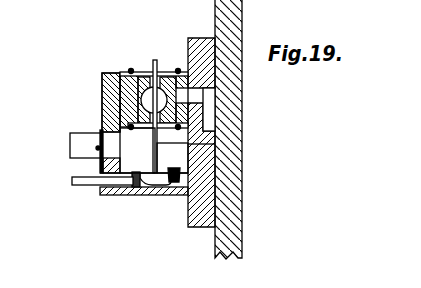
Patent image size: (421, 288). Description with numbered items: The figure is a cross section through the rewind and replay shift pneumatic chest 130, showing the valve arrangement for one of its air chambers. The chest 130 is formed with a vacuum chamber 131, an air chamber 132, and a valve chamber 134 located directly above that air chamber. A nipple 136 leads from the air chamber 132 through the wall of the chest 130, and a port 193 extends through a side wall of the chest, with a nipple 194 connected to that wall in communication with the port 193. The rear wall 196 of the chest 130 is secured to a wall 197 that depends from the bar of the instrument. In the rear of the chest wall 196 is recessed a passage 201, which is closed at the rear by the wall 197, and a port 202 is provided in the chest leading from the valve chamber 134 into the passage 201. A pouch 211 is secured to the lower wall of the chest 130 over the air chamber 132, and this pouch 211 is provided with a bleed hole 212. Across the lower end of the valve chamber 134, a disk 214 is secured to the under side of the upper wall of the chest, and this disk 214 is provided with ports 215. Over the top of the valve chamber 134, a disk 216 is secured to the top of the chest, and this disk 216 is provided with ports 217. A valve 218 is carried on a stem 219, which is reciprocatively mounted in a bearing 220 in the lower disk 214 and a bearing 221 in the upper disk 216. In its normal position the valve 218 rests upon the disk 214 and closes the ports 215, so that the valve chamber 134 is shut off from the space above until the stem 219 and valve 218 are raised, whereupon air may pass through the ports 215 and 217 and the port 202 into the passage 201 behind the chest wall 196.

The rewind and replay shift pneumatic chest 130 is at (143, 102).
The vacuum chamber 131 is at (137, 150).
The air chamber 132 is at (137, 196).
The valve chamber 134 is at (110, 113).
The nipple 136 is at (87, 180).
The port 193 is at (100, 158).
The nipple 194 is at (82, 143).
The rear wall of chest 196 is at (213, 177).
The wall 197 is at (232, 97).
The passage 201 is at (208, 108).
The port 202 is at (214, 70).
The pouch 211 is at (167, 196).
The bleed hole 212 is at (173, 168).
The disk 214 is at (138, 129).
The ports 215 is at (215, 144).
The disk 216 is at (130, 71).
The ports 217 is at (147, 72).
The valve 218 is at (108, 108).
The stem 219 is at (155, 60).
The bearing 220 is at (178, 130).
The bearing 221 is at (166, 72).